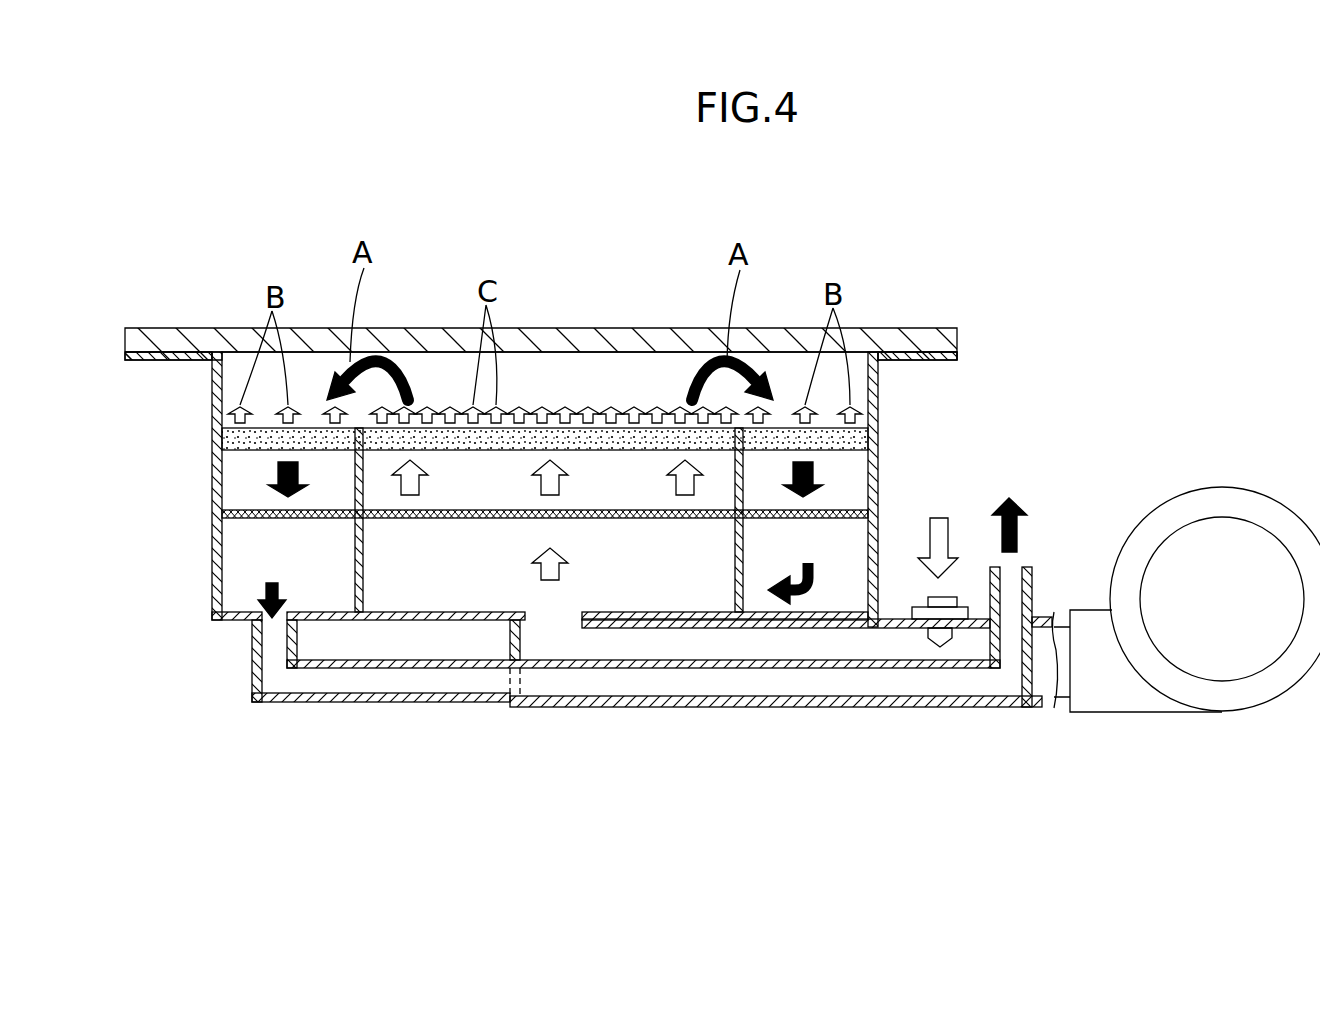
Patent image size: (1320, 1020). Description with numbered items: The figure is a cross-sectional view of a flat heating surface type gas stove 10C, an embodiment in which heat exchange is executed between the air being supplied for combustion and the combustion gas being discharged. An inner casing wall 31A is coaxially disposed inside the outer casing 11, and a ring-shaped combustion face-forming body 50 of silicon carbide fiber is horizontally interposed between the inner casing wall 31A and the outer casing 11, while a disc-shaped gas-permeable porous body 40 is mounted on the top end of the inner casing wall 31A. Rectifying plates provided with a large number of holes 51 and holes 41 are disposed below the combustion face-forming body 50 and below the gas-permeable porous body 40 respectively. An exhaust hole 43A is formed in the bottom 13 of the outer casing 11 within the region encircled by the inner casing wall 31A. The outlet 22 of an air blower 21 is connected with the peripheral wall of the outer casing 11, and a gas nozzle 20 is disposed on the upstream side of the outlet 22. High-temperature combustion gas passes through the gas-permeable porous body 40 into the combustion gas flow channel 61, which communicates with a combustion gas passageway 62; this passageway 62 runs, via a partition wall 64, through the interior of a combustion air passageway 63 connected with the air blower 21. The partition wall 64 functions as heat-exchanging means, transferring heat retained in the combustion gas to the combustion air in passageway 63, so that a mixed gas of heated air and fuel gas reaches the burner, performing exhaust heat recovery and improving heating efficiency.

The gas stove 10C is at (1164, 277).
The air blower 21 is at (195, 327).
The outer casing 11 is at (214, 588).
The combustion face-forming body 50 is at (565, 440).
The gas-permeable porous body 40 is at (260, 442).
The inner casing wall 31A is at (365, 552).
The holes 41 is at (305, 520).
The holes 51 is at (620, 518).
The combustion gas flow channel 61 is at (250, 552).
The bottom 13 is at (433, 622).
The exhaust hole 43A is at (272, 625).
The outlet 22 is at (546, 616).
The combustion gas passageway 62 is at (334, 680).
The partition wall 64 is at (657, 668).
The combustion air passageway 63 is at (775, 633).
The gas nozzle 20 is at (927, 600).